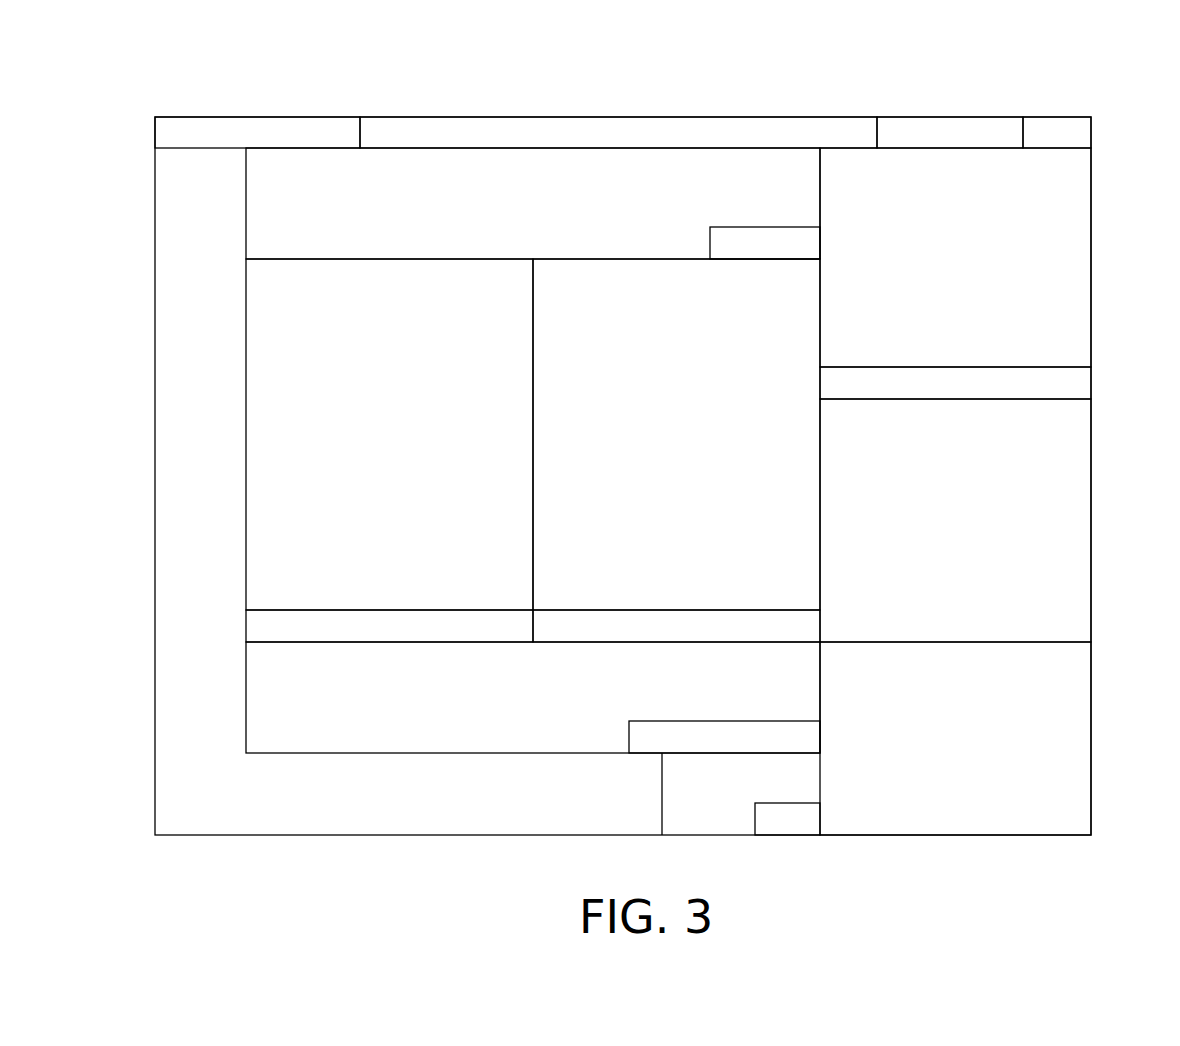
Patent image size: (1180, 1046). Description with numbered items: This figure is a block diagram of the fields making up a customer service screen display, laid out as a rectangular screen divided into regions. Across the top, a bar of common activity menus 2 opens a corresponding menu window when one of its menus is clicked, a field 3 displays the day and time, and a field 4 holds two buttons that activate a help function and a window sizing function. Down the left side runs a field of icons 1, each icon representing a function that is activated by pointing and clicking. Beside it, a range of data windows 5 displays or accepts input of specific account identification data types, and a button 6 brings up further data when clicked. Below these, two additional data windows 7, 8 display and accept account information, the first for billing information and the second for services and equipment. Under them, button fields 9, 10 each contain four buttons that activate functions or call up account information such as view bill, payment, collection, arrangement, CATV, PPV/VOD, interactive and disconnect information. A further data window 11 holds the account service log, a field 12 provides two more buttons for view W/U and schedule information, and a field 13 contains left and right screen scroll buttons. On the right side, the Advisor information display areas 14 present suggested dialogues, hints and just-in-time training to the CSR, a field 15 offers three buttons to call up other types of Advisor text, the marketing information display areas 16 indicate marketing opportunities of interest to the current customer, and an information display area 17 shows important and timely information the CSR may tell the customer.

The field of icons 1 is at (204, 195).
The bar of common activity menus 2 is at (207, 132).
The day and time field 3 is at (961, 133).
The help and window sizing button field 4 is at (1072, 132).
The range of data windows 5 is at (465, 175).
The further data button 6 is at (755, 250).
The billing information data window 7 is at (348, 383).
The services and equipment data window 8 is at (568, 460).
The button field 9 is at (282, 628).
The button field 10 is at (557, 626).
The account service log data window 11 is at (442, 736).
The further function button field 12 is at (648, 737).
The screen scroll button field 13 is at (785, 817).
The Advisor information display areas 14 is at (896, 188).
The Advisor text button field 15 is at (1007, 390).
The marketing information display areas 16 is at (904, 607).
The information display area 17 is at (1045, 780).